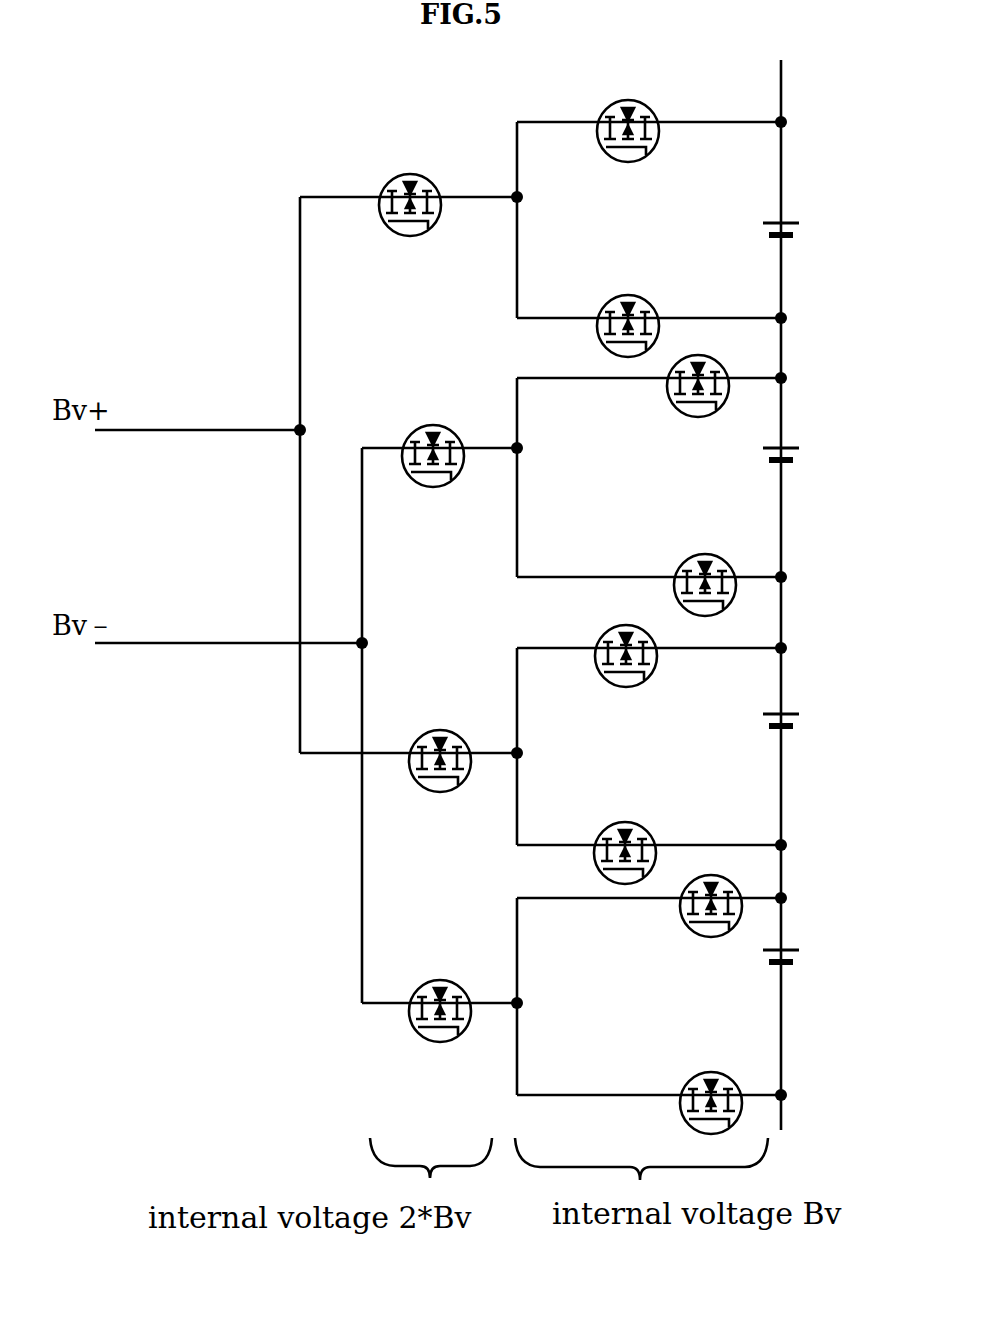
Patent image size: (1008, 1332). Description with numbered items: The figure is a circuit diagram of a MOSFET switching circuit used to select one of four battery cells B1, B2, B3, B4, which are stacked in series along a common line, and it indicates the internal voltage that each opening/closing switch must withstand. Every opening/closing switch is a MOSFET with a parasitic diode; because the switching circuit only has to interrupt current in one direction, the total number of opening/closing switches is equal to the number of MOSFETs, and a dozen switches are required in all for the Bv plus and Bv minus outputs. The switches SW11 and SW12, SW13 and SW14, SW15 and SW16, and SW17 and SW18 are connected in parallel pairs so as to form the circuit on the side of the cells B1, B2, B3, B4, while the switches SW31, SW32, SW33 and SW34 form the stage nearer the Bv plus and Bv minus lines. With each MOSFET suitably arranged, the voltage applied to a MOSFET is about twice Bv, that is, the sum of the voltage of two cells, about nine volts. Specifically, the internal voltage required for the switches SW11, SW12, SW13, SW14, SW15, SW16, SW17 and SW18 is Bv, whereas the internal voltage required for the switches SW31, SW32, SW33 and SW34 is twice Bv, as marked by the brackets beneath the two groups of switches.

The opening/closing switch SW11 is at (704, 1076).
The opening/closing switch SW12 is at (708, 924).
The opening/closing switch SW13 is at (696, 571).
The opening/closing switch SW14 is at (667, 404).
The opening/closing switch SW15 is at (614, 832).
The opening/closing switch SW16 is at (618, 671).
The opening/closing switch SW17 is at (606, 306).
The opening/closing switch SW18 is at (606, 148).
The opening/closing switch SW31 is at (440, 1027).
The opening/closing switch SW32 is at (440, 777).
The opening/closing switch SW33 is at (421, 440).
The opening/closing switch SW34 is at (403, 225).
The battery cell B1 is at (807, 959).
The battery cell B2 is at (811, 732).
The battery cell B3 is at (806, 462).
The battery cell B4 is at (806, 237).